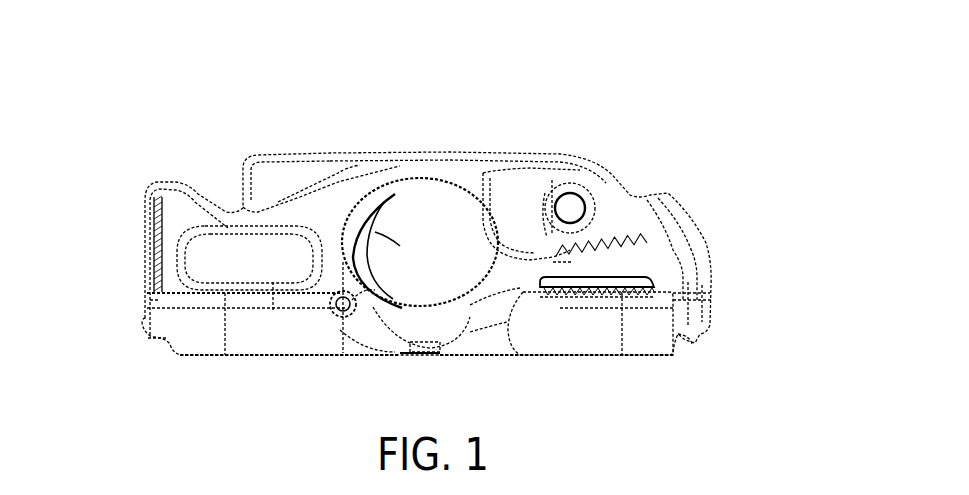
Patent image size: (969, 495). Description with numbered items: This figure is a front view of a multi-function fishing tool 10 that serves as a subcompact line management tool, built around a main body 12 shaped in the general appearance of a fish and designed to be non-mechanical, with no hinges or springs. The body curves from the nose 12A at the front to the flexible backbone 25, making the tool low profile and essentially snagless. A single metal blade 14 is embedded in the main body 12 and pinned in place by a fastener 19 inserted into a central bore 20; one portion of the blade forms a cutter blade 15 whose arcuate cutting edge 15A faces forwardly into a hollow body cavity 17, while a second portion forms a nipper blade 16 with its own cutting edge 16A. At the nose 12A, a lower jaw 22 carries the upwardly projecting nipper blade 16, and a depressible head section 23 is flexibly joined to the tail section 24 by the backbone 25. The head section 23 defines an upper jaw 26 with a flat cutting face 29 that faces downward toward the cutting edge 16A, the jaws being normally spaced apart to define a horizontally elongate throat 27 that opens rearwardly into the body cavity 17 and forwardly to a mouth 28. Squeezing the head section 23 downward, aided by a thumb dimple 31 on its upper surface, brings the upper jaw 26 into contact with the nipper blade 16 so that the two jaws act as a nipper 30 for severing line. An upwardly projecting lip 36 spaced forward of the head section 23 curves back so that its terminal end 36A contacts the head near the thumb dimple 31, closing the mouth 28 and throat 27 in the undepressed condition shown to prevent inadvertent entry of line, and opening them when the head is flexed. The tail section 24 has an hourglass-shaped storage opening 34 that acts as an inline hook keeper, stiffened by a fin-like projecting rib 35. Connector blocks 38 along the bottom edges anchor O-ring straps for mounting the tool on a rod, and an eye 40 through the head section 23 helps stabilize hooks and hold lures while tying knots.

The fishing tool 10 is at (180, 126).
The main body 12 is at (383, 148).
The nose 12A is at (744, 279).
The blade 14 is at (394, 207).
The cutter blade 15 is at (366, 253).
The cutting edge 15A is at (400, 246).
The nipper blade 16 is at (608, 282).
The cutting edge 16A is at (600, 256).
The hollow body cavity 17 is at (477, 284).
The fastener 19 is at (337, 307).
The central bore 20 is at (375, 306).
The lower jaw 22 is at (647, 295).
The head section 23 is at (570, 194).
The tail section 24 is at (158, 208).
The flexible backbone 25 is at (448, 180).
The upper jaw 26 is at (596, 246).
The throat 27 is at (580, 265).
The mouth 28 is at (660, 268).
The flat cutting face 29 is at (561, 260).
The nipper 30 is at (608, 326).
The thumb dimple 31 is at (595, 225).
The storage opening 34 is at (213, 243).
The projecting rib 35 is at (283, 172).
The lip 36 is at (640, 276).
The terminal end 36A is at (612, 238).
The connector blocks 38 is at (217, 340).
The eye 40 is at (557, 203).